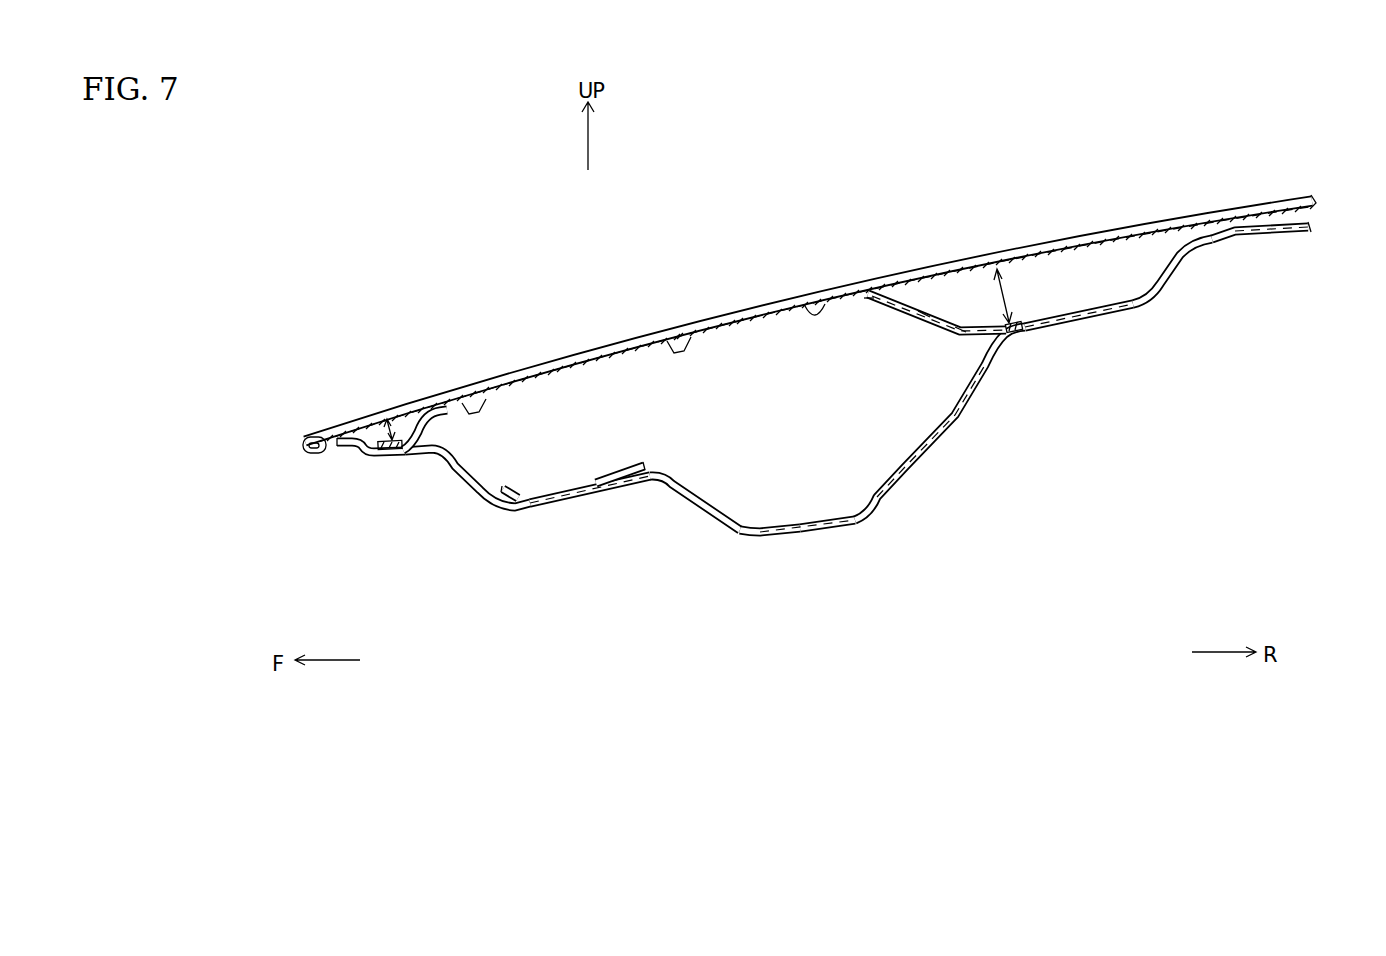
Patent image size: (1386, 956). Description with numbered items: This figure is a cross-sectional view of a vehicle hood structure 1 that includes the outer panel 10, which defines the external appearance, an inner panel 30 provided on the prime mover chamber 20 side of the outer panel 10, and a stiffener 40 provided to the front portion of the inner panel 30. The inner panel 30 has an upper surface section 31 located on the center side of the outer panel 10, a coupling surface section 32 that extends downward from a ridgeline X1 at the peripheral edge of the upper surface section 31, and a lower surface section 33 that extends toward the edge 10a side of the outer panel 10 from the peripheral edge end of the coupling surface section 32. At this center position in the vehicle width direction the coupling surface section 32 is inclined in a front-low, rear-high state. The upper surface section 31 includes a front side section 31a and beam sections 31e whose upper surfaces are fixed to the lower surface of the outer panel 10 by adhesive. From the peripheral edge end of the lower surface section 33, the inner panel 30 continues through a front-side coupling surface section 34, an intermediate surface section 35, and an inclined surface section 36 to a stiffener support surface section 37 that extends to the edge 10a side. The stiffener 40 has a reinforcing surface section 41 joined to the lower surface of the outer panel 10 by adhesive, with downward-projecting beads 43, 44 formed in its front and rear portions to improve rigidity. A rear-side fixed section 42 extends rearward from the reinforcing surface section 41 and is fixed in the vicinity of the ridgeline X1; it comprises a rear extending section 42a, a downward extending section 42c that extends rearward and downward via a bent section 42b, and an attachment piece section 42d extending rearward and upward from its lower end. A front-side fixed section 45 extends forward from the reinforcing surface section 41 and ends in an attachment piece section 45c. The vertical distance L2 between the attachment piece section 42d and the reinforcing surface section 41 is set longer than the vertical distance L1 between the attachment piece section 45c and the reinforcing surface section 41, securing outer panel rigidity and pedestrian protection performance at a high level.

The hood structure 1 is at (711, 249).
The outer panel 10 is at (903, 278).
The edge 10a is at (303, 448).
The prime mover chamber 20 is at (824, 417).
The inner panel 30 is at (828, 541).
The upper surface section 31 is at (1099, 306).
The front side section 31a is at (1115, 315).
The beam section 31e is at (1258, 233).
The coupling surface section 32 is at (950, 425).
The lower surface section 33 is at (757, 534).
The front-side coupling surface section 34 is at (712, 498).
The intermediate surface section 35 is at (568, 497).
The inclined surface section 36 is at (449, 464).
The stiffener support surface section 37 is at (384, 455).
The stiffener 40 is at (785, 327).
The reinforcing surface section 41 is at (614, 362).
The rear-side fixed section 42 is at (935, 330).
The rear extending section 42a is at (810, 303).
The bent section 42b is at (868, 300).
The downward extending section 42c is at (925, 313).
The attachment piece section 42d is at (968, 336).
The bead 43 is at (478, 408).
The bead 44 is at (680, 353).
The front-side fixed section 45 is at (419, 412).
The attachment piece section 45c is at (398, 456).
The vertical distance L1 is at (383, 421).
The vertical distance L2 is at (1008, 300).
The ridgeline X1 is at (1015, 334).